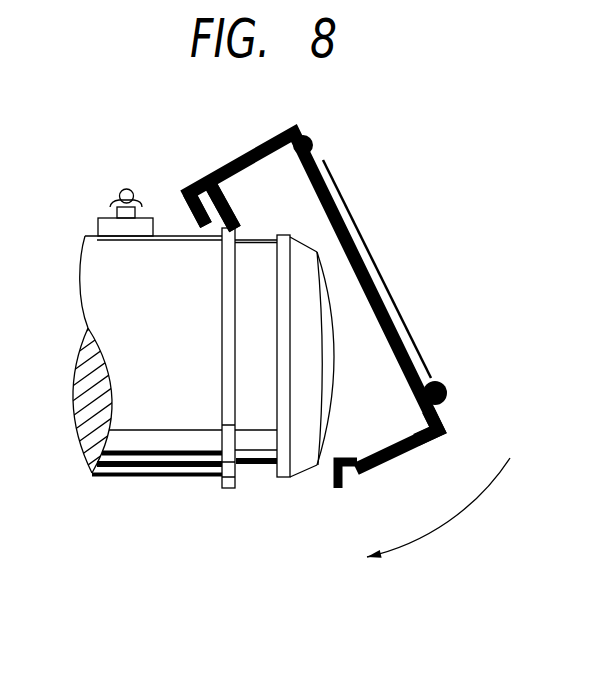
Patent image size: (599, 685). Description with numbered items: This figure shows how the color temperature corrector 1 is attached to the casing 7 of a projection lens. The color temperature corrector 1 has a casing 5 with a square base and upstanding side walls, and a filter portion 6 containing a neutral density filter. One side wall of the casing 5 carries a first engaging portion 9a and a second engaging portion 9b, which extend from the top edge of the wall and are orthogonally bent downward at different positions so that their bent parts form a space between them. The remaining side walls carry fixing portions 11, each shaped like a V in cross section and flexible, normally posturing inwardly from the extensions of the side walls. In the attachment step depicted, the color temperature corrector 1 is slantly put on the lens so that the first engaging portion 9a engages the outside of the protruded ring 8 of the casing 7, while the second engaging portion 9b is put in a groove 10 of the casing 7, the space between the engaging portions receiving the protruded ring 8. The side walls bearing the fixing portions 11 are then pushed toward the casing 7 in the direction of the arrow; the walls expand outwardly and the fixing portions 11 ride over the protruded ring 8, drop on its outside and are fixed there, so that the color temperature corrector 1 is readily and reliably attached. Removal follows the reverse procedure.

The color temperature corrector 1 is at (258, 146).
The casing 5 is at (447, 410).
The filter portion 6 is at (335, 184).
The casing 7 is at (80, 258).
The protruded ring 8 is at (227, 490).
The first engaging portion 9a is at (193, 206).
The second engaging portion 9b is at (212, 172).
The groove 10 is at (250, 464).
The fixing portion 11 is at (351, 472).